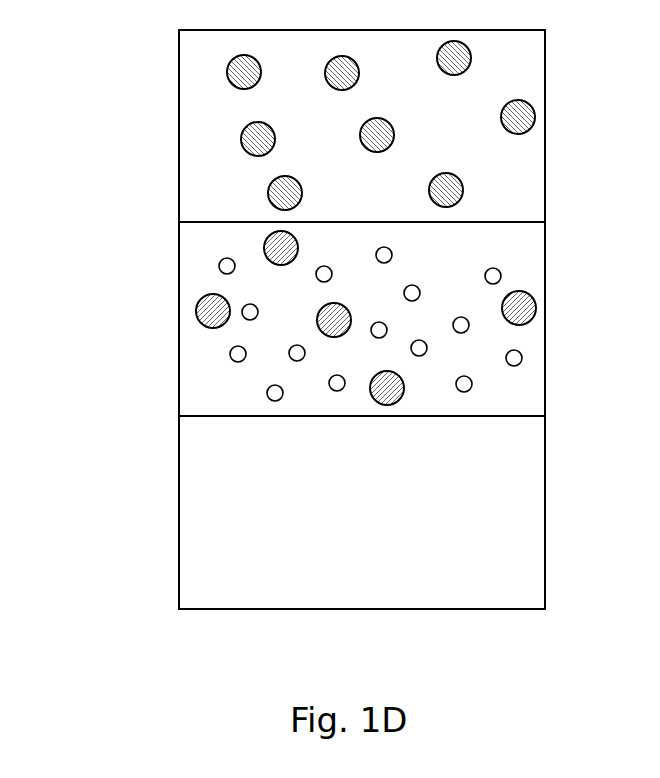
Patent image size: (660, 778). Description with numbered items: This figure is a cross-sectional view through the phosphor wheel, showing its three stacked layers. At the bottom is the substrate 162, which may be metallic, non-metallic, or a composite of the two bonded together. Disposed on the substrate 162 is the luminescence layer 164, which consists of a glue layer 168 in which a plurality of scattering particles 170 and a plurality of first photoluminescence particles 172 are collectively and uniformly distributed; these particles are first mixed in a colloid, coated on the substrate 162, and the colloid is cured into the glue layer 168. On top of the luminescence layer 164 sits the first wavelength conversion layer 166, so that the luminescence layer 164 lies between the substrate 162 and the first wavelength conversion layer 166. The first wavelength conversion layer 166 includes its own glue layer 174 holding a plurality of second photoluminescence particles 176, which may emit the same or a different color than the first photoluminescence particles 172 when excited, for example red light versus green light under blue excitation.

The substrate 162 is at (160, 416).
The luminescence layer 164 is at (160, 222).
The first wavelength conversion layer 166 is at (160, 30).
The glue layer 168 is at (523, 253).
The scattering particles 170 is at (502, 273).
The first photoluminescence particles 172 is at (532, 300).
The glue layer 174 is at (523, 59).
The second photoluminescence particles 176 is at (530, 105).